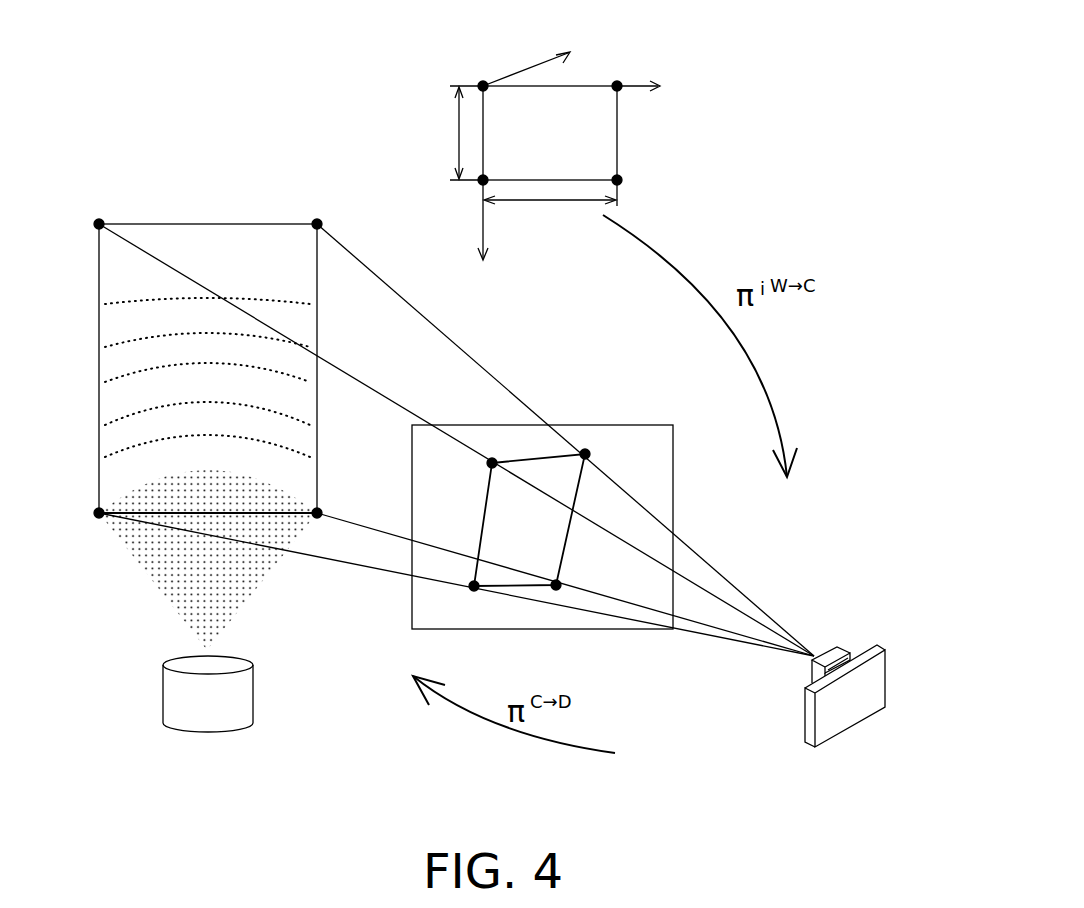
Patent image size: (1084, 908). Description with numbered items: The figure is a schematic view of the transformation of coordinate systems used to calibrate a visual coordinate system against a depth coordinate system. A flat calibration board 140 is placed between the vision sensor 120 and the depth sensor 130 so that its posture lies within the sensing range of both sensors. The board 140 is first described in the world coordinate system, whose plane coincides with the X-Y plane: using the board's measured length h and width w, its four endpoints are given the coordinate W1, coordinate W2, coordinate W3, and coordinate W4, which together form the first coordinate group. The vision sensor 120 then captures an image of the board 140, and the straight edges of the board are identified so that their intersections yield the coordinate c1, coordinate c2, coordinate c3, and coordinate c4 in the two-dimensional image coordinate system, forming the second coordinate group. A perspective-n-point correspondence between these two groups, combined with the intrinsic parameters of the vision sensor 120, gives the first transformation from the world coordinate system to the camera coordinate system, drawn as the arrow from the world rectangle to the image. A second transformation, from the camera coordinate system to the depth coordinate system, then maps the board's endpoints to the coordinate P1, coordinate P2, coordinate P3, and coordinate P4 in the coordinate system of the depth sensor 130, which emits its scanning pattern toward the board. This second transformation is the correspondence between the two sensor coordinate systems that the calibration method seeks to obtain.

The vision sensor 120 is at (878, 680).
The depth sensor 130 is at (243, 687).
The calibration board 140 is at (587, 85).
The coordinate P1 is at (317, 513).
The coordinate P2 is at (99, 513).
The coordinate P3 is at (99, 224).
The coordinate P4 is at (317, 224).
The coordinate W1 is at (483, 86).
The coordinate W2 is at (483, 180).
The coordinate W3 is at (617, 180).
The coordinate W4 is at (617, 86).
The coordinate c1 is at (556, 585).
The coordinate c2 is at (474, 586).
The coordinate c3 is at (492, 463).
The coordinate c4 is at (585, 454).